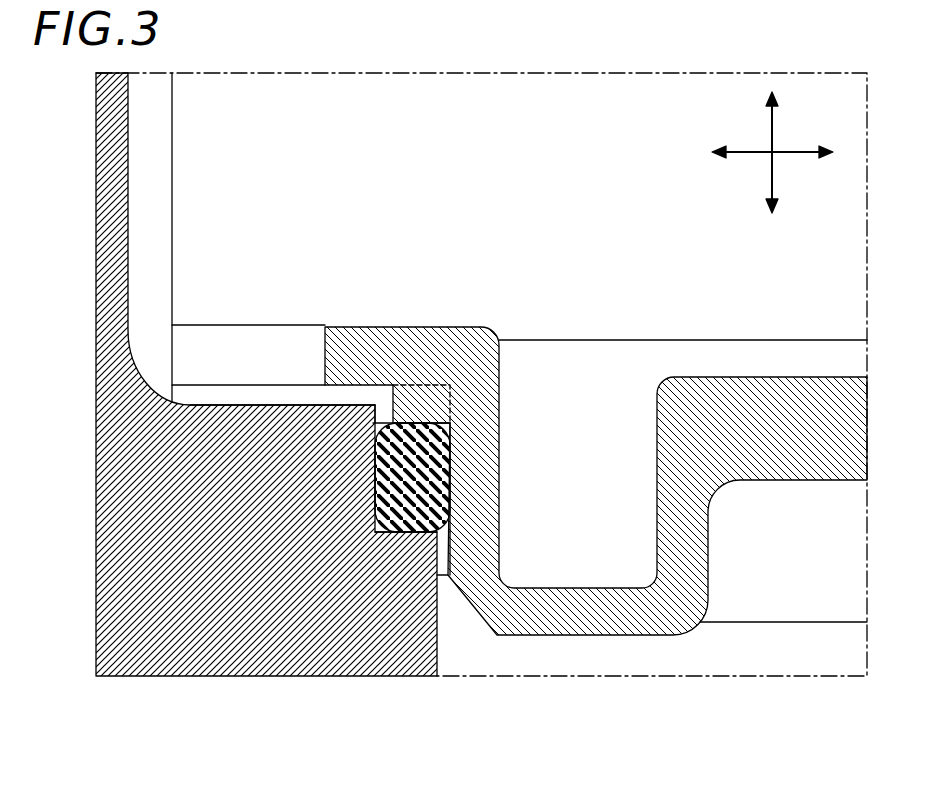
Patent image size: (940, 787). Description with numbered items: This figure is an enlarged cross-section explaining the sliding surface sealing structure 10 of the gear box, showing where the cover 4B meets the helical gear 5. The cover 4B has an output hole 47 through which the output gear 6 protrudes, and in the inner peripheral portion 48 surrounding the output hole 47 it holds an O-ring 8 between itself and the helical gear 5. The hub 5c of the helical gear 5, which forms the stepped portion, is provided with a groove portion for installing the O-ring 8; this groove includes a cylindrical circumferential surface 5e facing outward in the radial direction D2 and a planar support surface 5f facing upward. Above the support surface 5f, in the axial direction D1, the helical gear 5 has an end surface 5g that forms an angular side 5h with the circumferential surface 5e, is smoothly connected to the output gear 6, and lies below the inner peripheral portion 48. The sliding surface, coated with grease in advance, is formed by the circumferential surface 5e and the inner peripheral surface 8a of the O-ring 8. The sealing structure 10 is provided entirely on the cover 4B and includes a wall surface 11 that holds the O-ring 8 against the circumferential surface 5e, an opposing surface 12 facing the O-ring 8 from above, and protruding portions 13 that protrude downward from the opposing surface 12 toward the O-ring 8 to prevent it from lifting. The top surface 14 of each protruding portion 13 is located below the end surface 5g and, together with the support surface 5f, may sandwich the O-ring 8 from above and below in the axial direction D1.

The helical gear 5 is at (266, 417).
The hub 5c is at (257, 569).
The circumferential surface 5e is at (397, 532).
The support surface 5f is at (452, 518).
The end surface 5g is at (222, 400).
The side 5h is at (377, 402).
The output gear 6 is at (178, 163).
The O-ring 8 is at (420, 487).
The inner peripheral surface 8a is at (373, 477).
The sealing structure 10 is at (441, 311).
The wall surface 11 is at (452, 480).
The opposing surface 12 is at (343, 397).
The protruding portion 13 is at (427, 403).
The top surface 14 is at (448, 443).
The output hole 47 is at (254, 346).
The inner peripheral portion 48 is at (352, 342).
The cover 4B is at (605, 300).
The axial direction D1 is at (776, 128).
The radial direction D2 is at (792, 155).